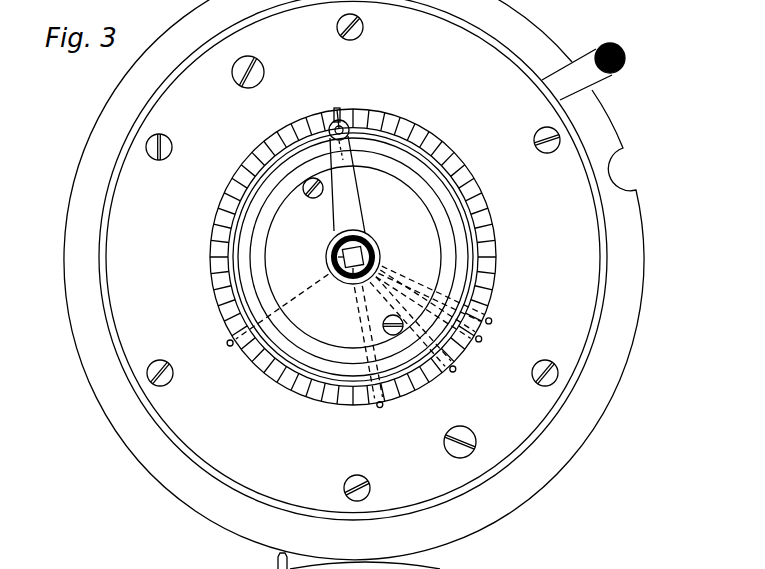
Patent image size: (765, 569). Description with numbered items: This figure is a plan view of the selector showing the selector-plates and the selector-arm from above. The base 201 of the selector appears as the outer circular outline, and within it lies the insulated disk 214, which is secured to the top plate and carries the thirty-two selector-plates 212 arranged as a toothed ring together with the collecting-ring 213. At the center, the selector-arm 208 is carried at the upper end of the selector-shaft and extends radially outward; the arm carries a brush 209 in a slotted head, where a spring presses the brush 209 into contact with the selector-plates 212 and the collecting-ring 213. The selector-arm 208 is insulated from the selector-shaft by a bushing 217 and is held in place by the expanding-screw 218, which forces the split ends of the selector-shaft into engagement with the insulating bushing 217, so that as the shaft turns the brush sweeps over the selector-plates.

The base 201 is at (632, 265).
The selector-arm 208 is at (350, 200).
The brush 209 is at (342, 110).
The selector-plates 212 is at (236, 183).
The collecting-ring 213 is at (243, 256).
The insulated disk 214 is at (348, 257).
The bushing 217 is at (378, 252).
The expanding-screw 218 is at (368, 247).